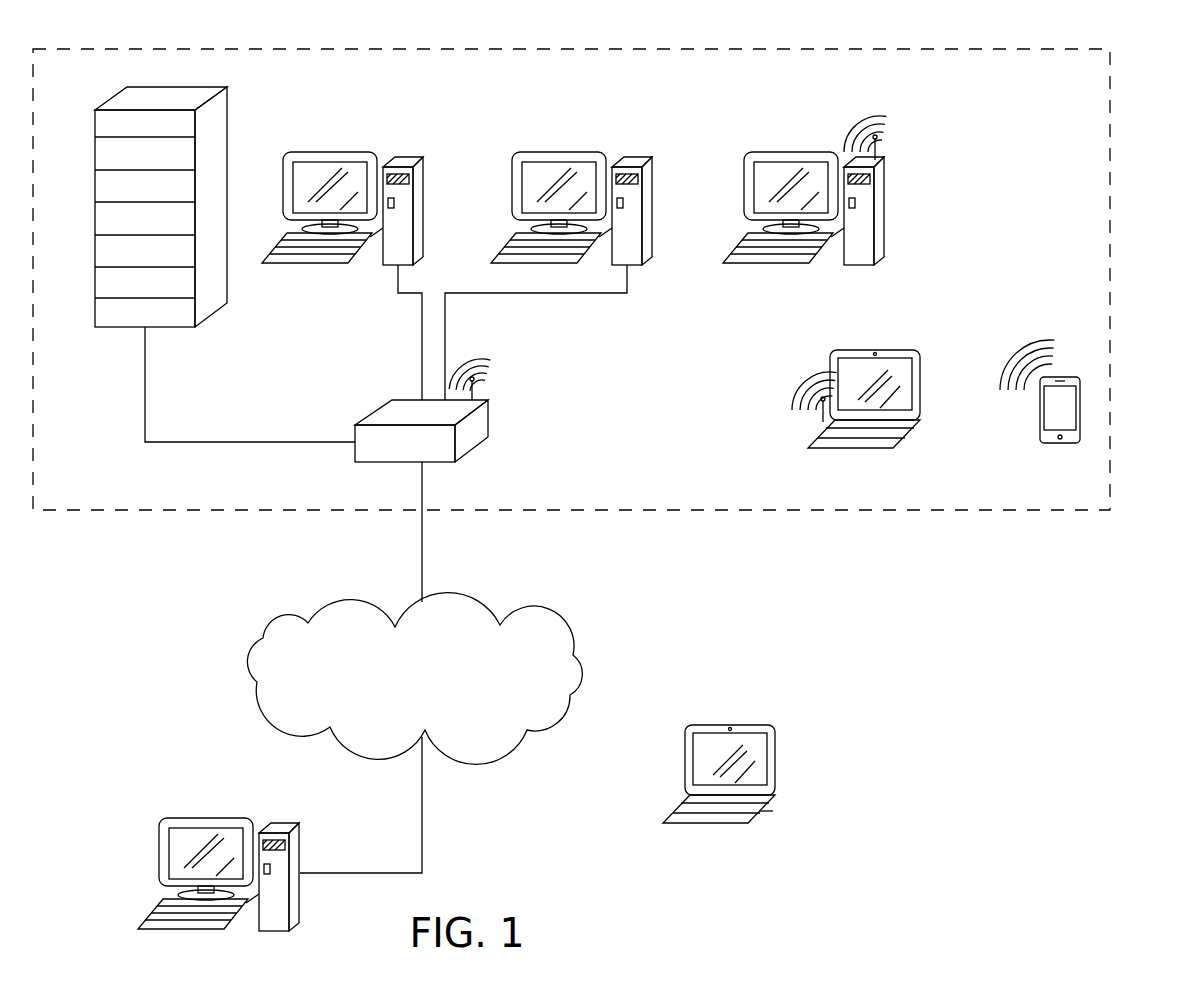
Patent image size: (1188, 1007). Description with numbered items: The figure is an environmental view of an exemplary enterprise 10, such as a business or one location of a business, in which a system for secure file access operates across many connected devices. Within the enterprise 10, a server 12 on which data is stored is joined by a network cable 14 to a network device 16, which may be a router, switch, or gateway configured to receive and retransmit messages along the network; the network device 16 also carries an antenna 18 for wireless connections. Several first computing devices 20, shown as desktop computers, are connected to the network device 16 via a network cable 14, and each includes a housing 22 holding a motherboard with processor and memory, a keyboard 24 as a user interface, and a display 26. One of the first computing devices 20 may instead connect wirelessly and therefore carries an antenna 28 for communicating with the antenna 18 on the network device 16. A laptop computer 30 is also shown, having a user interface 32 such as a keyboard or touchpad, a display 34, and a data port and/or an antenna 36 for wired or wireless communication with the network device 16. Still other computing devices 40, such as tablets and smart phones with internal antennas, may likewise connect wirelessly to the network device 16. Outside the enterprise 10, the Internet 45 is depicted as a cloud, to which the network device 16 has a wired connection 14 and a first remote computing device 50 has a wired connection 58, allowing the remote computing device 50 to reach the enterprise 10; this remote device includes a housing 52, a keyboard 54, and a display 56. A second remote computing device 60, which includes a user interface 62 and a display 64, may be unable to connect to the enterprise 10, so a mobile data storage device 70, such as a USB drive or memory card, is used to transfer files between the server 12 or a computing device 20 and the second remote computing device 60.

The enterprise 10 is at (1112, 90).
The server 12 is at (131, 87).
The network cable 14 is at (272, 437).
The network device 16 is at (483, 442).
The antenna 18 is at (474, 393).
The first computing device 20 is at (326, 129).
The housing 22 is at (424, 202).
The keyboard 24 is at (274, 249).
The display 26 is at (294, 152).
The antenna 28 is at (880, 147).
The laptop computer 30 is at (814, 464).
The user interface 32 is at (915, 428).
The display 34 is at (838, 350).
The antenna 36 is at (818, 417).
The other computing device 40 is at (1046, 461).
The Internet 45 is at (556, 625).
The first remote computing device 50 is at (232, 836).
The housing 52 is at (299, 872).
The keyboard 54 is at (191, 895).
The display 56 is at (199, 837).
The wired connection 58 is at (425, 805).
The second remote computing device 60 is at (733, 737).
The user interface 62 is at (707, 795).
The display 64 is at (718, 738).
The mobile data storage device 70 is at (793, 783).